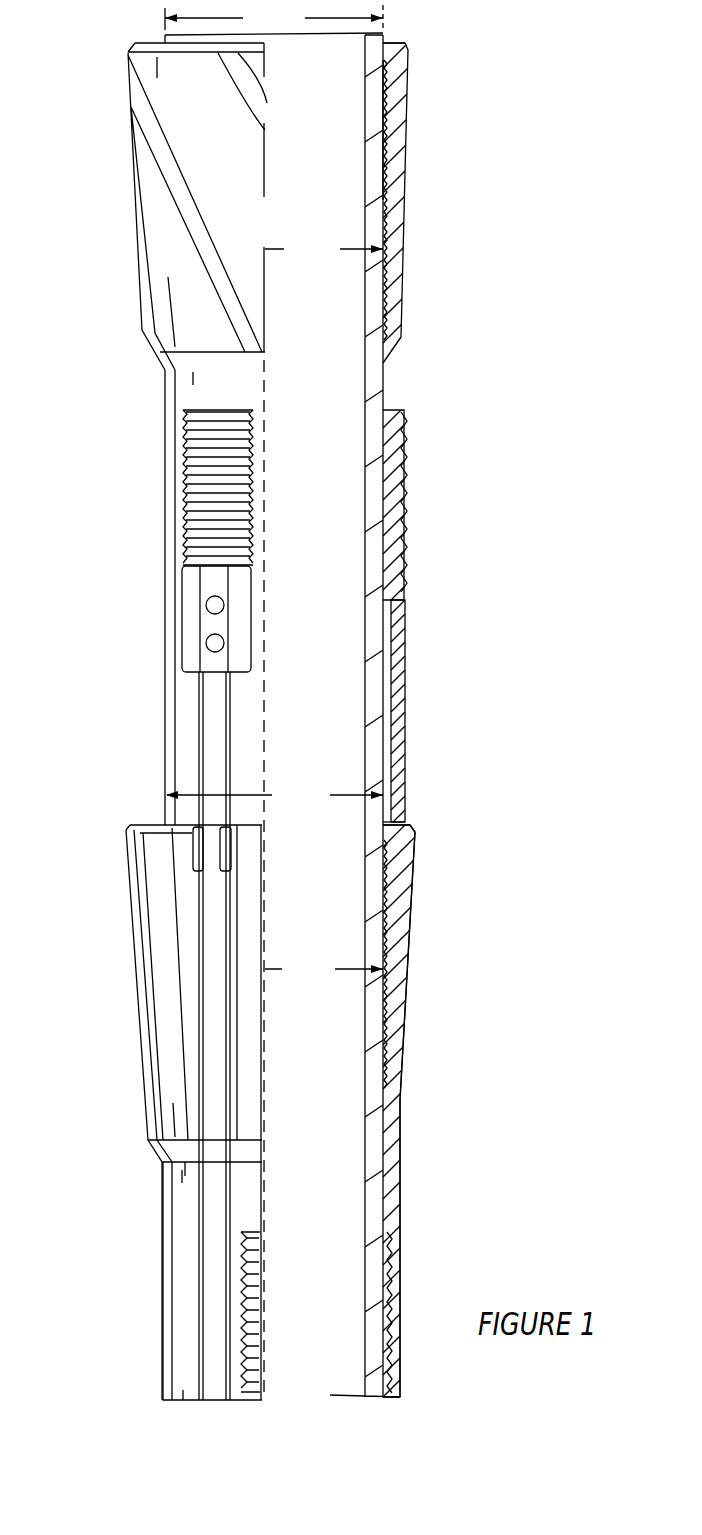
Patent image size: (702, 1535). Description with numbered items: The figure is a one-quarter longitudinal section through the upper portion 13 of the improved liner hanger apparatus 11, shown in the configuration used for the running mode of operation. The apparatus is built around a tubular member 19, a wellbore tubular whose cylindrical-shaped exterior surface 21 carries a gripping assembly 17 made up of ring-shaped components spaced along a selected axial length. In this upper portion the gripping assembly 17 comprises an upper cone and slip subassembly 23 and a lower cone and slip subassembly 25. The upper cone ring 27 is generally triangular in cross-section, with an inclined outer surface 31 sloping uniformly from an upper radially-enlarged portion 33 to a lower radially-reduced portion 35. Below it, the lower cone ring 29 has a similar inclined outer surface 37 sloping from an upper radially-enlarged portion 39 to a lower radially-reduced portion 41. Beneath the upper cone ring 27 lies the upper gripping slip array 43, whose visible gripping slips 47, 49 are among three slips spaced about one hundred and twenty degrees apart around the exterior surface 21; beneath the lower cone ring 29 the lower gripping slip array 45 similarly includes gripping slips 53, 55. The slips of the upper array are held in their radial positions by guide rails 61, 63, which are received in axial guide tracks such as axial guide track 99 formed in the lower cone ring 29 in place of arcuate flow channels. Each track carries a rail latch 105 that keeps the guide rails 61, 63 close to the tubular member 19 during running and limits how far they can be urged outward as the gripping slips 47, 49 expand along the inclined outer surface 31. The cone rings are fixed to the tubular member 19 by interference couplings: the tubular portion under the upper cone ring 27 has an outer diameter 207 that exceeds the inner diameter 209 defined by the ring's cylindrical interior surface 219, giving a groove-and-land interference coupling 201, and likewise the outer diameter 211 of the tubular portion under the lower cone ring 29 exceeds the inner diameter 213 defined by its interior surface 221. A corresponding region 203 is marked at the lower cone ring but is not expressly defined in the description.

The improved liner hanger apparatus 11 is at (450, 262).
The upper portion 13 is at (427, 520).
The gripping assembly 17 is at (422, 868).
The tubular member 19 is at (383, 393).
The exterior surface 21 is at (180, 722).
The upper cone and slip subassembly 23 is at (150, 400).
The lower cone and slip subassembly 25 is at (150, 1220).
The upper cone ring 27 is at (148, 205).
The lower cone ring 29 is at (140, 1027).
The inclined outer surface 31 is at (403, 160).
The upper radially-enlarged portion 33 is at (407, 44).
The lower radially-reduced portion 35 is at (400, 336).
The inclined outer surface 37 is at (405, 1040).
The upper radially-enlarged portion 39 is at (412, 827).
The lower radially-reduced portion 41 is at (400, 1145).
The upper gripping slip array 43 is at (180, 527).
The lower gripping slip array 45 is at (395, 1272).
The gripping slip 47 is at (185, 455).
The gripping slip 49 is at (407, 457).
The gripping slip 53 is at (250, 1300).
The gripping slip 55 is at (398, 1375).
The guide rail 61 is at (205, 778).
The guide rail 63 is at (407, 567).
The axial guide track 99 is at (175, 930).
The rail latch 105 is at (197, 858).
The groove-and-land interference coupling 201 is at (392, 100).
The seal surface 203 is at (388, 948).
The outer diameter 207 is at (274, 19).
The inner diameter 209 is at (324, 248).
The outer diameter 211 is at (274, 794).
The inner diameter 213 is at (324, 968).
The interior surface 219 is at (380, 70).
The interior surface 221 is at (396, 912).